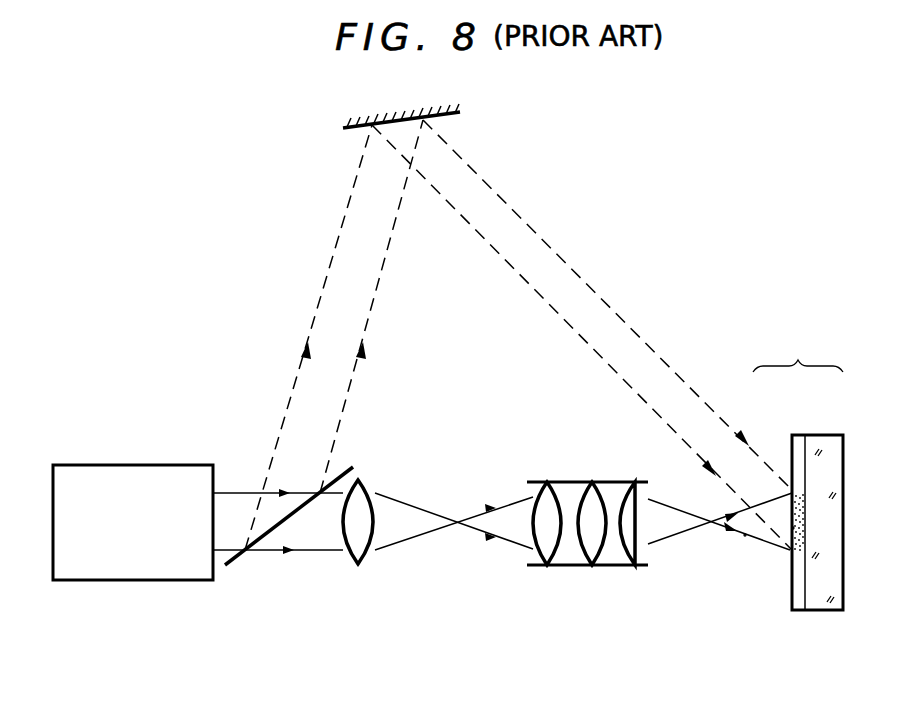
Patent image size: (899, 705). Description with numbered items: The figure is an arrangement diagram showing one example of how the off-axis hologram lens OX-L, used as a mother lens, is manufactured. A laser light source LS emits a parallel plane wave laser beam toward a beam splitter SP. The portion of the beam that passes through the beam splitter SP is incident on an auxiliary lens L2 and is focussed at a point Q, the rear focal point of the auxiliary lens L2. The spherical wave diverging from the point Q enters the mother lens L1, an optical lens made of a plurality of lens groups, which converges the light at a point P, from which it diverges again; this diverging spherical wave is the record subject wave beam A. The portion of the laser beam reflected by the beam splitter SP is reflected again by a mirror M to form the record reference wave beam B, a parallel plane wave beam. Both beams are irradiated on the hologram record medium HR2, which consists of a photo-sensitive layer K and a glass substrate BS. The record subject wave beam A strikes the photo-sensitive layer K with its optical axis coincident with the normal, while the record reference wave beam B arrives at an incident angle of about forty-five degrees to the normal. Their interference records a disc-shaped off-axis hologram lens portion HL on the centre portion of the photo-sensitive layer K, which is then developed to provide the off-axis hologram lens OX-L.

The laser light source LS is at (128, 581).
The beam splitter SP is at (345, 467).
The record reference wave beam B is at (626, 322).
The mirror M is at (458, 116).
The auxiliary lens L2 is at (358, 565).
The focal point Q is at (455, 518).
The mother lens L1 is at (577, 480).
The convergence point P is at (709, 526).
The record subject wave beam A is at (746, 534).
The off-axis hologram lens portion HL is at (793, 528).
The hologram record medium HR2 is at (833, 359).
The photo-sensitive layer K is at (796, 433).
The glass substrate BS is at (830, 433).
The off-axis hologram lens OX-L is at (814, 614).